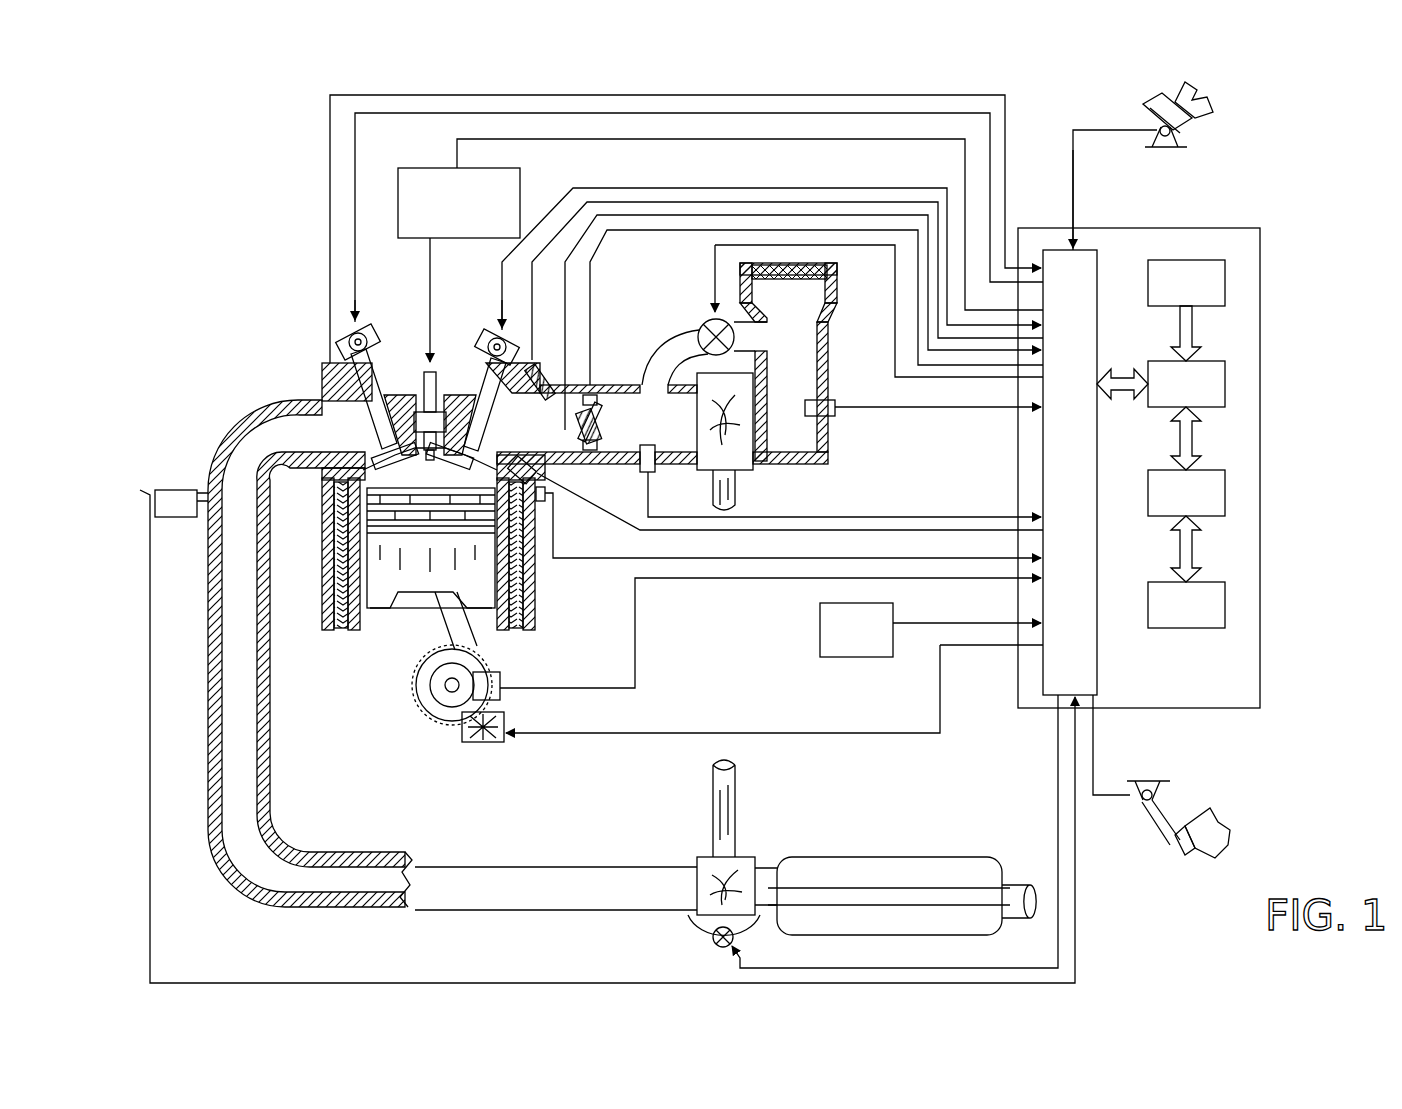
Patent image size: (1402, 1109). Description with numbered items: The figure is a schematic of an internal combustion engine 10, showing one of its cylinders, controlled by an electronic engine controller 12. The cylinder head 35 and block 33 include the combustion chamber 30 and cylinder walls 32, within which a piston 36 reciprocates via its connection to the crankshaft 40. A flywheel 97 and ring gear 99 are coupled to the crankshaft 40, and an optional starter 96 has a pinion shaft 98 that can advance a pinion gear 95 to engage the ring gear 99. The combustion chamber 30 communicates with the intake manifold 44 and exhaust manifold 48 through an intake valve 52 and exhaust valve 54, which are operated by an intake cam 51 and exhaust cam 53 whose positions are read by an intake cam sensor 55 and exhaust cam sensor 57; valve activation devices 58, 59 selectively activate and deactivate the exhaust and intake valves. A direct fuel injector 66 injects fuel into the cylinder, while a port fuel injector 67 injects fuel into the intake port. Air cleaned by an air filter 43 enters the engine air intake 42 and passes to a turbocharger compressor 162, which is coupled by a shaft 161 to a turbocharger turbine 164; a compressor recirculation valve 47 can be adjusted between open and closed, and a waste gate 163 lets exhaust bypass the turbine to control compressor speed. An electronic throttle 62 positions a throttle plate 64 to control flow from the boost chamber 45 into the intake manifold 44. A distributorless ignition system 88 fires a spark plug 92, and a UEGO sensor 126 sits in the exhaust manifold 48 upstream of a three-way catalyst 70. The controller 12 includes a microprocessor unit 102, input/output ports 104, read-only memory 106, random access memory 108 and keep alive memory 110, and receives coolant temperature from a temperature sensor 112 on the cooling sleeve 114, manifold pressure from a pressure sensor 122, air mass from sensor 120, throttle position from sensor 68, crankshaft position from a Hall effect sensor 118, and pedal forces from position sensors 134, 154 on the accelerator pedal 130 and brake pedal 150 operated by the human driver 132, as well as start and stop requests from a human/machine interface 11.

The internal combustion engine 10 is at (250, 318).
The human/machine interface 11 is at (930, 630).
The electronic engine controller 12 is at (1262, 228).
The combustion chamber 30 is at (388, 478).
The cylinder walls 32 is at (352, 640).
The block 33 is at (322, 500).
The cylinder head 35 is at (318, 360).
The piston 36 is at (412, 575).
The crankshaft 40 is at (432, 705).
The engine air intake 42 is at (655, 298).
The air filter 43 is at (800, 282).
The intake manifold 44 is at (662, 424).
The boost chamber 45 is at (658, 425).
The compressor recirculation valve 47 is at (705, 322).
The exhaust manifold 48 is at (492, 655).
The intake cam 51 is at (492, 330).
The intake valve 52 is at (482, 432).
The exhaust cam 53 is at (365, 332).
The exhaust valve 54 is at (340, 415).
The intake cam sensor 55 is at (534, 352).
The exhaust cam sensor 57 is at (345, 335).
The valve activation device 58 is at (390, 325).
The valve activation device 59 is at (485, 355).
The electronic throttle 62 is at (596, 422).
The throttle plate 64 is at (598, 442).
The direct fuel injector 66 is at (540, 485).
The port fuel injector 67 is at (548, 368).
The throttle position sensor 68 is at (592, 400).
The three-way catalyst 70 is at (822, 857).
The distributorless ignition system 88 is at (520, 178).
The spark plug 92 is at (434, 365).
The pinion gear 95 is at (490, 748).
The starter 96 is at (505, 742).
The flywheel 97 is at (437, 700).
The pinion shaft 98 is at (476, 745).
The ring gear 99 is at (445, 716).
The microprocessor unit 102 is at (1228, 385).
The input/output ports 104 is at (1100, 262).
The read-only memory 106 is at (1228, 287).
The random access memory 108 is at (1228, 493).
The keep alive memory 110 is at (1228, 605).
The temperature sensor 112 is at (548, 502).
The cooling sleeve 114 is at (520, 585).
The Hall effect sensor 118 is at (500, 678).
The air mass sensor 120 is at (835, 404).
The pressure sensor 122 is at (640, 470).
The Universal Exhaust Gas Oxygen sensor 126 is at (580, 727).
The accelerator pedal 130 is at (1145, 112).
The human driver 132 is at (1208, 103).
The position sensor 134 is at (1175, 130).
The brake pedal 150 is at (1175, 845).
The position sensor 154 is at (1142, 790).
The shaft 161 is at (712, 492).
The turbocharger compressor 162 is at (740, 462).
The waste gate 163 is at (713, 942).
The turbocharger turbine 164 is at (697, 858).